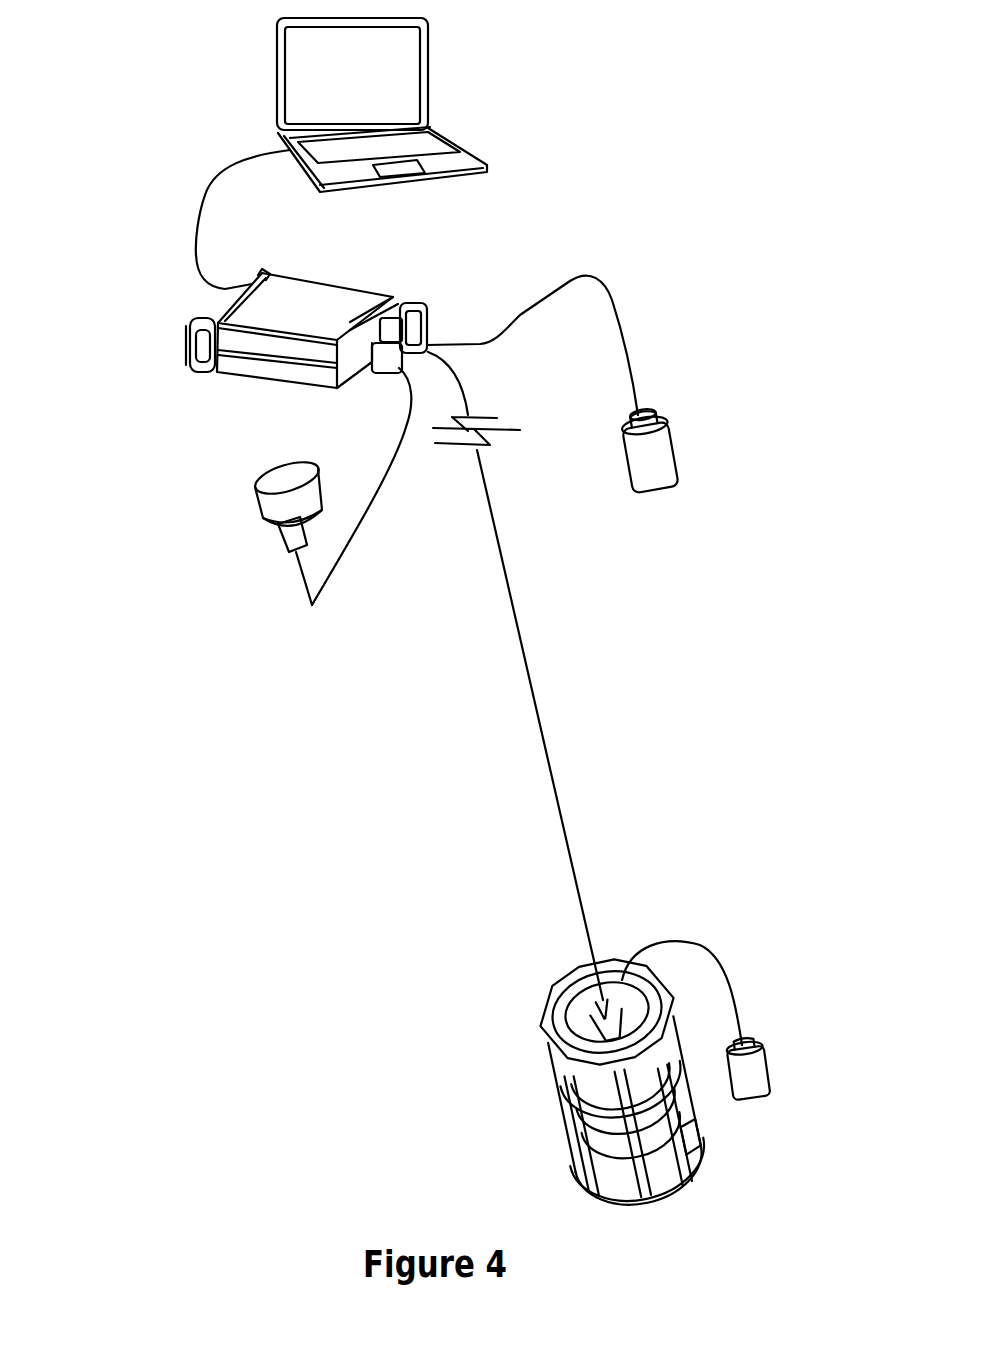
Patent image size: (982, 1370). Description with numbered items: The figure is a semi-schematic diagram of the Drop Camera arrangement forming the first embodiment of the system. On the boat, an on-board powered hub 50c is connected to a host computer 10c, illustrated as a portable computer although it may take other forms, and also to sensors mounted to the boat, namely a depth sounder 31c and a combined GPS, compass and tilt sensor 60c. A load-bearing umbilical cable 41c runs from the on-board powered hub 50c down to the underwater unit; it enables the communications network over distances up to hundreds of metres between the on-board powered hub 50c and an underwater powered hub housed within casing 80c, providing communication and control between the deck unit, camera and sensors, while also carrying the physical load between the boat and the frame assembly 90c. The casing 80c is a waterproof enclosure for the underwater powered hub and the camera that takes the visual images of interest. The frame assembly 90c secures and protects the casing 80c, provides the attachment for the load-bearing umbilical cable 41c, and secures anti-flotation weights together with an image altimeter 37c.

The host computer 10c is at (440, 100).
The on-board powered hub 50c is at (212, 393).
The depth sounder 31c is at (685, 493).
The combined GPS, compass & tilt sensor 60c is at (243, 522).
The load-bearing umbilical cable 41c is at (572, 768).
The frame assembly 90c is at (528, 1045).
The casing 80c is at (604, 1108).
The image altimeter 37c is at (758, 1103).